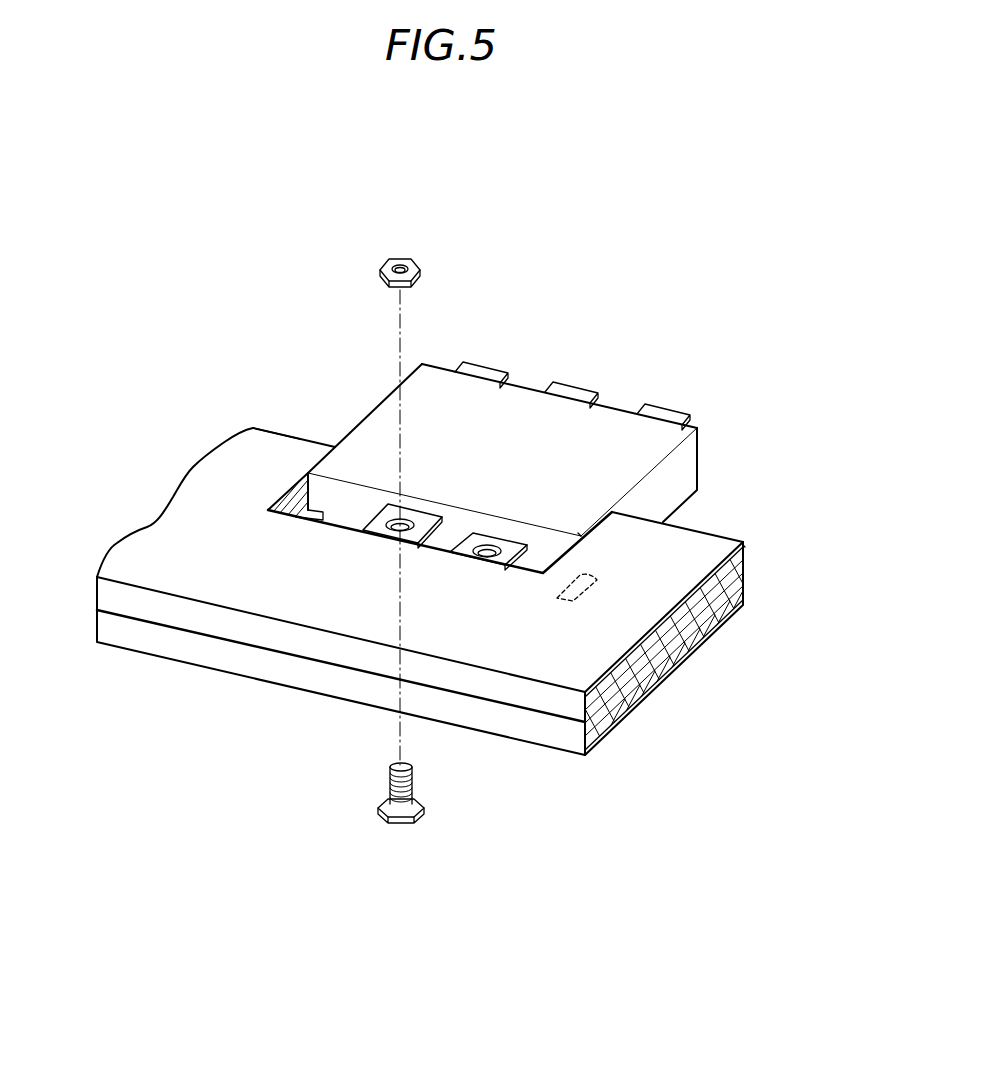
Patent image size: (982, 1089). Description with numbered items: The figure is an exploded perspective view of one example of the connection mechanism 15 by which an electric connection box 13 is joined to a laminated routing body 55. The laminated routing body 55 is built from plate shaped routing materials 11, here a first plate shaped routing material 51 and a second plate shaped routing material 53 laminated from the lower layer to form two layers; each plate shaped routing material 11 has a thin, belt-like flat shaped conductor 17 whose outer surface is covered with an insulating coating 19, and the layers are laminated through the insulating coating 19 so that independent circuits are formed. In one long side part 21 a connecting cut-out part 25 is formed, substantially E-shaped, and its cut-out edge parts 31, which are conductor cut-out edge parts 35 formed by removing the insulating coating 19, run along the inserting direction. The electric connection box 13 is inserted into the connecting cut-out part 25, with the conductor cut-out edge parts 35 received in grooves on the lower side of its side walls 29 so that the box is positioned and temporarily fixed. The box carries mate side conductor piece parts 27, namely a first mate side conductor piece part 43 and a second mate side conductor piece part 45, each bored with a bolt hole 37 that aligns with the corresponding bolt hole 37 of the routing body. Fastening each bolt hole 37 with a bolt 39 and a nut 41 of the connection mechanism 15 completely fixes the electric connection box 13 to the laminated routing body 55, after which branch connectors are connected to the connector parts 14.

The plate shaped routing material 11 is at (680, 591).
The electric connection box 13 is at (612, 401).
The connector parts 14 is at (490, 370).
The connection mechanism 15 is at (349, 569).
The flat shaped conductor 17 is at (655, 688).
The insulating coating 19 is at (190, 538).
The long side part 21 is at (307, 438).
The connecting cut-out part 25 is at (580, 528).
The mate side conductor piece part 27 is at (470, 491).
The side walls 29 is at (528, 432).
The cut-out edge parts 31 is at (406, 611).
The conductor cut-out edge parts 35 is at (298, 500).
The bolt hole 37 is at (388, 527).
The bolt 39 is at (385, 803).
The nut 41 is at (383, 266).
The first mate side conductor piece part 43 is at (505, 543).
The second mate side conductor piece part 45 is at (432, 515).
The first plate shaped routing material 51 is at (737, 630).
The second plate shaped routing material 53 is at (716, 525).
The laminated routing body 55 is at (750, 563).